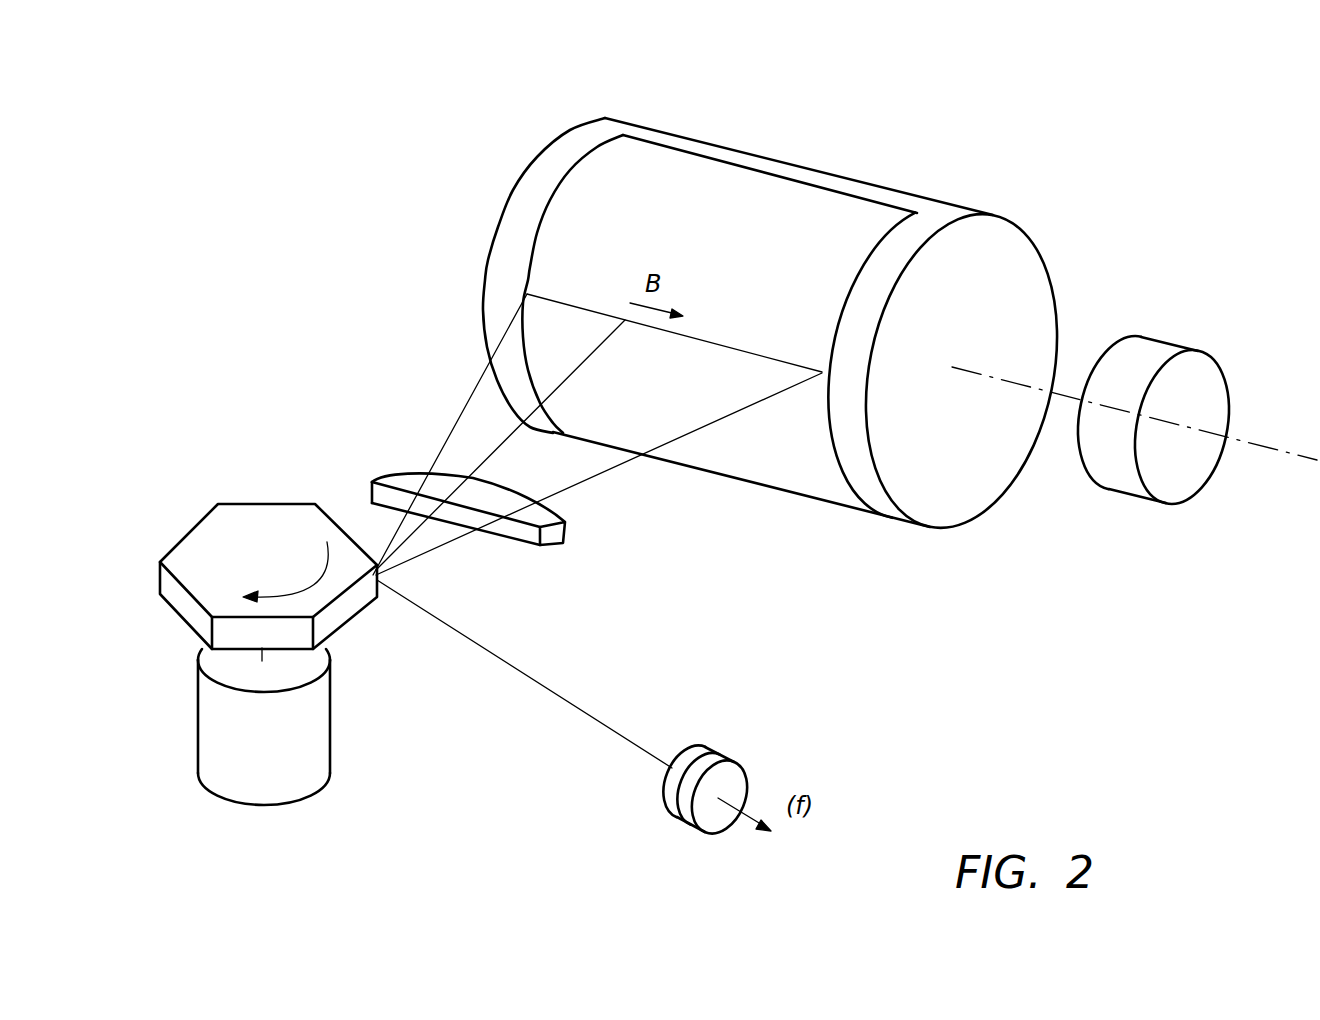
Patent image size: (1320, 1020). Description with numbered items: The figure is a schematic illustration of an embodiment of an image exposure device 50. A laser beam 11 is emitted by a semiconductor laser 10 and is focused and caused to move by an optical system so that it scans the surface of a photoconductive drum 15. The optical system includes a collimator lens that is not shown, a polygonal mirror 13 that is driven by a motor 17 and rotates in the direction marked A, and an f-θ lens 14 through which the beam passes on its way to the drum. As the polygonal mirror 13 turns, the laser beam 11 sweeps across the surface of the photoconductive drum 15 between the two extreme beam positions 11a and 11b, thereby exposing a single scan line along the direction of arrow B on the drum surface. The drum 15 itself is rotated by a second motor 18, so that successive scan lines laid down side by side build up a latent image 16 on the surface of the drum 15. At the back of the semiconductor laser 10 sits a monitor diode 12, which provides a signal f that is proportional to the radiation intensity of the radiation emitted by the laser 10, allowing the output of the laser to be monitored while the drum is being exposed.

The image exposure device 50 is at (355, 170).
The semiconductor laser 10 is at (707, 747).
The laser beam 11 is at (412, 535).
The extreme beam position 11a is at (481, 377).
The extreme beam position 11b is at (597, 477).
The monitor diode 12 is at (703, 817).
The polygonal mirror 13 is at (207, 562).
The f-θ lens 14 is at (402, 473).
The photoconductive drum 15 is at (702, 140).
The latent image 16 is at (852, 220).
The motor 17 is at (283, 788).
The motor 18 is at (1203, 388).